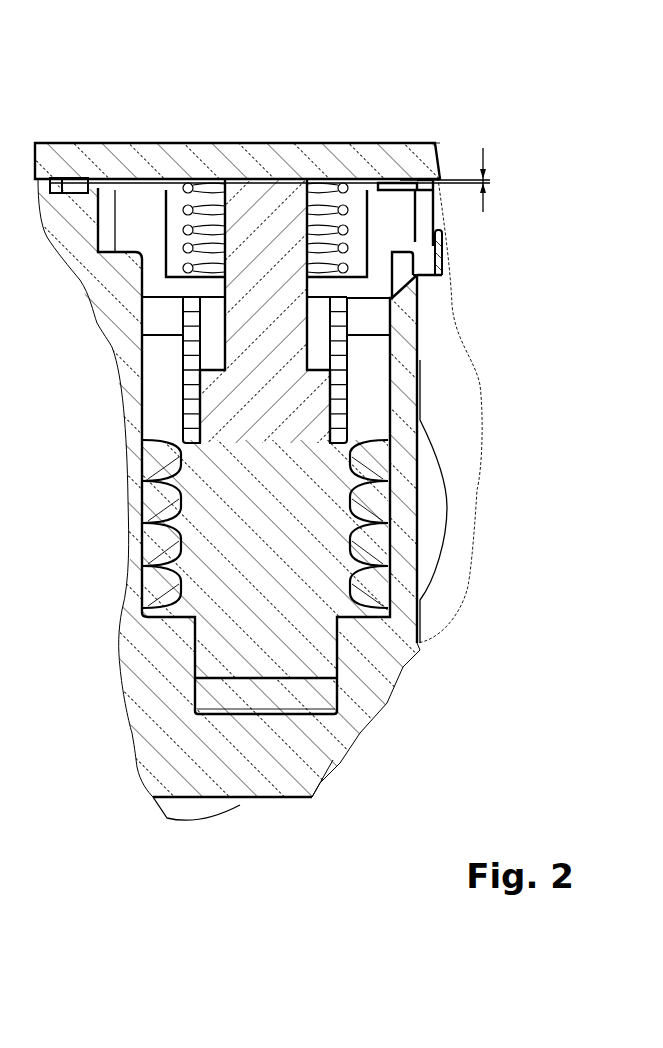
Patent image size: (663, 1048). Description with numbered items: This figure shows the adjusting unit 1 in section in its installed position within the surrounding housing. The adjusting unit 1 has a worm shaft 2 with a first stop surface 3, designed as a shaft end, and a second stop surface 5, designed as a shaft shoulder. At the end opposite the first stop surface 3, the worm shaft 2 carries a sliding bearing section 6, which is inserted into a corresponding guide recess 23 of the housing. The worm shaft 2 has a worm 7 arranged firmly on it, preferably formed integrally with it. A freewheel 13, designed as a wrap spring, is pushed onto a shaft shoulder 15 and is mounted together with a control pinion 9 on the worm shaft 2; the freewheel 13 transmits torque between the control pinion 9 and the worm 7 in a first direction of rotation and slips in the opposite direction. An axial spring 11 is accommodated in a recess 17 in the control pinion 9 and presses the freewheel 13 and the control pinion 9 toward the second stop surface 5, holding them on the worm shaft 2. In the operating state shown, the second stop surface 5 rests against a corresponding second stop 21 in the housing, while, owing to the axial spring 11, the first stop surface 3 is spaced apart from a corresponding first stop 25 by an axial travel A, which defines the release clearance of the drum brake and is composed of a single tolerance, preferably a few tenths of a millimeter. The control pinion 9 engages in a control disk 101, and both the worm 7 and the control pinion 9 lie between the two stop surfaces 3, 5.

The adjusting unit 1 is at (170, 68).
The worm shaft 2 is at (297, 313).
The first stop surface 3 is at (265, 170).
The second stop surface 5 is at (337, 606).
The sliding bearing section 6 is at (207, 648).
The worm 7 is at (366, 517).
The control pinion 9 is at (398, 237).
The axial spring 11 is at (320, 193).
The freewheel 13 is at (190, 313).
The shaft shoulder 15 is at (314, 420).
The recess 17 is at (360, 188).
The second stop 21 is at (360, 620).
The guide recess 23 is at (185, 667).
The first stop 25 is at (112, 173).
The control disk 101 is at (445, 207).
The axial travel A is at (490, 181).